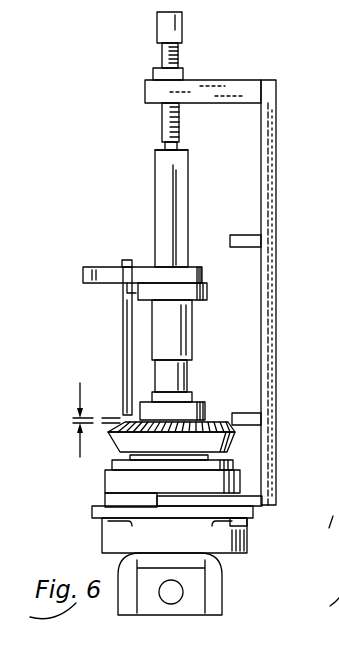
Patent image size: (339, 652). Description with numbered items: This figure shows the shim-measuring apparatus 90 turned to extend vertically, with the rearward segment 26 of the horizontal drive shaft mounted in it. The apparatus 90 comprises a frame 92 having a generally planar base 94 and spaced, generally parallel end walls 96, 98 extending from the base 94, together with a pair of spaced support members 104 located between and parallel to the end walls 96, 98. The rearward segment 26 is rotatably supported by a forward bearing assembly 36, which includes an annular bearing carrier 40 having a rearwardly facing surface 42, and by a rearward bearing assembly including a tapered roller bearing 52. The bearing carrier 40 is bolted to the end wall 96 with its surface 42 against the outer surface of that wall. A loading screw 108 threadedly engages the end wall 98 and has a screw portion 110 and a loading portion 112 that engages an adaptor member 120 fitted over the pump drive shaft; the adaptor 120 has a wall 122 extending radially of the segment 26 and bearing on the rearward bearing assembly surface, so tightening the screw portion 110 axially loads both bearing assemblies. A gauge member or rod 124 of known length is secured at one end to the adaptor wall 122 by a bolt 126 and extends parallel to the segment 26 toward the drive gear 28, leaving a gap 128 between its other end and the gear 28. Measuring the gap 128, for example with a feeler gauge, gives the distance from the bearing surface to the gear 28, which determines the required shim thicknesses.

The rearward segment 26 is at (176, 378).
The drive gear 28 is at (111, 428).
The forward bearing assembly 36 is at (269, 538).
The bearing carrier 40 is at (100, 527).
The rearwardly facing surface 42 is at (105, 506).
The tapered roller bearing 52 is at (207, 292).
The apparatus 90 is at (293, 119).
The frame 92 is at (268, 172).
The base 94 is at (268, 124).
The end wall 96 is at (248, 499).
The end wall 98 is at (145, 91).
The support members 104 is at (242, 235).
The loading screw 108 is at (198, 59).
The screw portion 110 is at (157, 24).
The loading portion 112 is at (157, 168).
The adaptor member 120 is at (167, 192).
The wall 122 is at (114, 275).
The gauge member 124 is at (122, 317).
The bolt 126 is at (131, 259).
The gap 128 is at (80, 383).